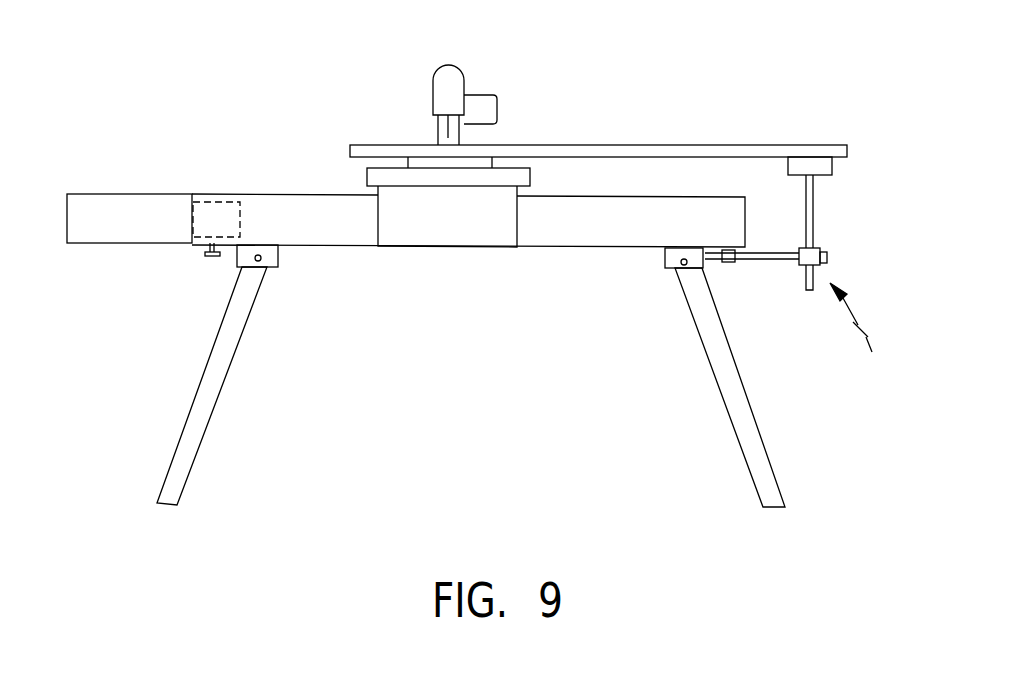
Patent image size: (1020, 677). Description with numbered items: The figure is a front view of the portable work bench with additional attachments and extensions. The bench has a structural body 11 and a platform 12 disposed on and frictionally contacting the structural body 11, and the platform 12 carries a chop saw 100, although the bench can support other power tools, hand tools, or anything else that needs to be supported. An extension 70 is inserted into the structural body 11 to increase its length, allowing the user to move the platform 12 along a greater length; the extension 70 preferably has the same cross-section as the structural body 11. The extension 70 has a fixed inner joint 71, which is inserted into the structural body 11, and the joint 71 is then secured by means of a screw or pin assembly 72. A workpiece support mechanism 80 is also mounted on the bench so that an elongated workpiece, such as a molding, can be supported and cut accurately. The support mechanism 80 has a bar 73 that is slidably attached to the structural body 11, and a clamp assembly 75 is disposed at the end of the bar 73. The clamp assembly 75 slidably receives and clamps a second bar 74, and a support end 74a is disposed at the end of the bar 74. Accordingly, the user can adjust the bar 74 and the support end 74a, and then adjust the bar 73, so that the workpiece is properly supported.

The structural body 11 is at (570, 220).
The platform 12 is at (443, 220).
The extension 70 is at (152, 217).
The fixed inner joint 71 is at (213, 217).
The screw or pin assembly 72 is at (202, 255).
The bar 73 is at (762, 263).
The bar 74 is at (815, 205).
The support end 74a is at (835, 167).
The clamp assembly 75 is at (827, 257).
The workpiece support mechanism 80 is at (864, 329).
The chop saw 100 is at (450, 86).